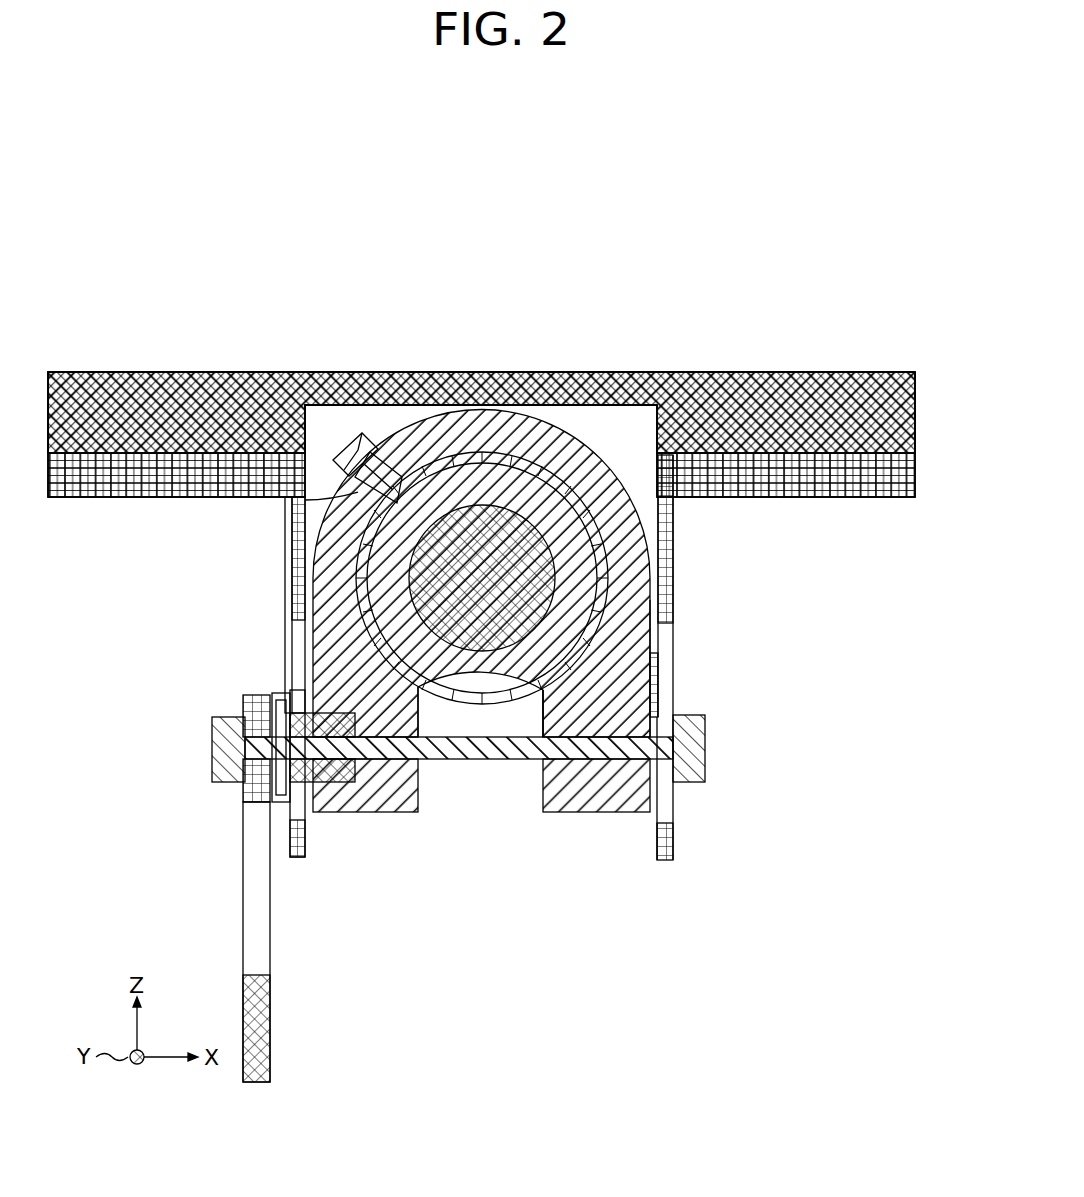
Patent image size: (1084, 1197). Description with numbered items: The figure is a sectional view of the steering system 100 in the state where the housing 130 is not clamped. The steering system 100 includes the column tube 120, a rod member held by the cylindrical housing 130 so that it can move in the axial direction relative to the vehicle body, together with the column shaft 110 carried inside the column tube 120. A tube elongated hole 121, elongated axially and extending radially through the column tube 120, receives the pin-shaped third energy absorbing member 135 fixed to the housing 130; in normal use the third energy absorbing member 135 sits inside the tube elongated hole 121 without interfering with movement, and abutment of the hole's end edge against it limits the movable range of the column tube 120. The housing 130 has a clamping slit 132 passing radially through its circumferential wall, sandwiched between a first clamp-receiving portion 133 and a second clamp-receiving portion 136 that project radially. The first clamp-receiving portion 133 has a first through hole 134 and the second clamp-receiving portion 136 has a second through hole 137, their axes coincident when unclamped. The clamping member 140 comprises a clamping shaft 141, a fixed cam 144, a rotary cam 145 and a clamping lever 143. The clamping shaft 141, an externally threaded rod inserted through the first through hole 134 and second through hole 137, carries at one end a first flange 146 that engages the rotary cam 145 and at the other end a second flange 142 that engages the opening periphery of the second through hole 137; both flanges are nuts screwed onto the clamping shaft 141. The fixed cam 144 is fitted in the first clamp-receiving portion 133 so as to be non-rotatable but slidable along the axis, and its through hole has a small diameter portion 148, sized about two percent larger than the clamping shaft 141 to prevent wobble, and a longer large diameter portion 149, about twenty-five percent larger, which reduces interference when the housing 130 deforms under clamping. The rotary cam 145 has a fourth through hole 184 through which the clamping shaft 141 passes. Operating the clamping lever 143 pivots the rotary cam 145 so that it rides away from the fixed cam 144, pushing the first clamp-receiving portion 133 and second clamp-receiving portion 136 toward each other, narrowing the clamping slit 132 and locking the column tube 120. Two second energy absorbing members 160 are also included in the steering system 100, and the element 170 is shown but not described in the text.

The steering system 100 is at (683, 250).
The column shaft 110 is at (410, 607).
The column tube 120 is at (437, 462).
The tube elongated hole 121 is at (305, 500).
The housing 130 is at (513, 410).
The clamping slit 132 is at (445, 710).
The first clamp-receiving portion 133 is at (357, 812).
The first through hole 134 is at (405, 765).
The third energy absorbing member 135 is at (348, 437).
The second clamp-receiving portion 136 is at (628, 812).
The second through hole 137 is at (558, 762).
The clamping member 140 is at (419, 883).
The clamping shaft 141 is at (500, 760).
The second flange 142 is at (700, 785).
The clamping lever 143 is at (243, 995).
The fixed cam 144 is at (267, 803).
The rotary cam 145 is at (243, 796).
The first flange 146 is at (212, 778).
The small diameter portion 148 is at (293, 858).
The large diameter portion 149 is at (333, 812).
The second energy absorbing member 160 is at (290, 665).
The support plate 170 is at (110, 500).
The fourth through hole 184 is at (252, 742).